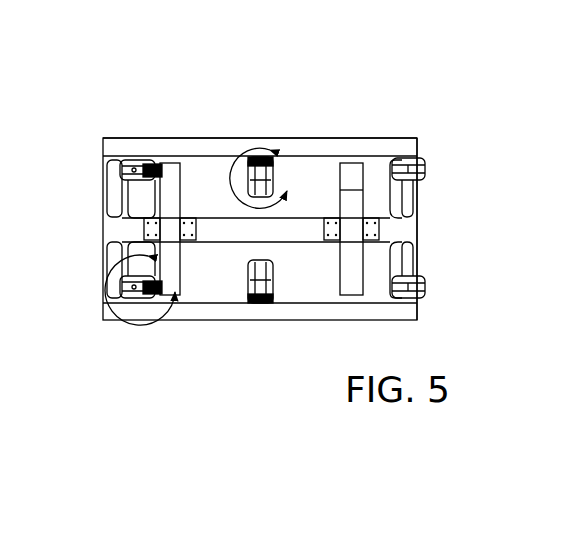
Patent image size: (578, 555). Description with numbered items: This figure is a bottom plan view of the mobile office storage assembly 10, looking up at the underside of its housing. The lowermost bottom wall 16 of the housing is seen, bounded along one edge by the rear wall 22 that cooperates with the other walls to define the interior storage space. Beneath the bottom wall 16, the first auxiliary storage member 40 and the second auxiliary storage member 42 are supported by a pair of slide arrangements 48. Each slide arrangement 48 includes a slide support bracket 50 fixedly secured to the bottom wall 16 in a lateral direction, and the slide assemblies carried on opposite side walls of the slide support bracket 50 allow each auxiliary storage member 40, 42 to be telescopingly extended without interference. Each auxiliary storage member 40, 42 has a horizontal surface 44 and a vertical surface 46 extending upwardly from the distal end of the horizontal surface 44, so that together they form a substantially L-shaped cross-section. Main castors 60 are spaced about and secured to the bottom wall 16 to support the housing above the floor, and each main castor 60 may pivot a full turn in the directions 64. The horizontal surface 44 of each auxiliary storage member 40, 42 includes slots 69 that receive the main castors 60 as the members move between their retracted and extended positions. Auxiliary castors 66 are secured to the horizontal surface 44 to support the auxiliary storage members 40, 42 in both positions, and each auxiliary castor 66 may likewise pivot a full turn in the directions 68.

The mobile office storage assembly 10 is at (386, 60).
The bottom wall 16 is at (405, 228).
The rear wall 22 is at (418, 236).
The first auxiliary storage member 40 is at (218, 136).
The second auxiliary storage member 42 is at (270, 324).
The horizontal surface 44 is at (322, 172).
The vertical surface 46 is at (308, 138).
The slide arrangement 48 is at (183, 175).
The slide support bracket 50 is at (356, 203).
The main castor 60 is at (120, 170).
The pivot directions of main castors 64 is at (109, 306).
The auxiliary castor 66 is at (255, 287).
The pivot directions of auxiliary castors 68 is at (255, 156).
The slots 69 is at (120, 200).